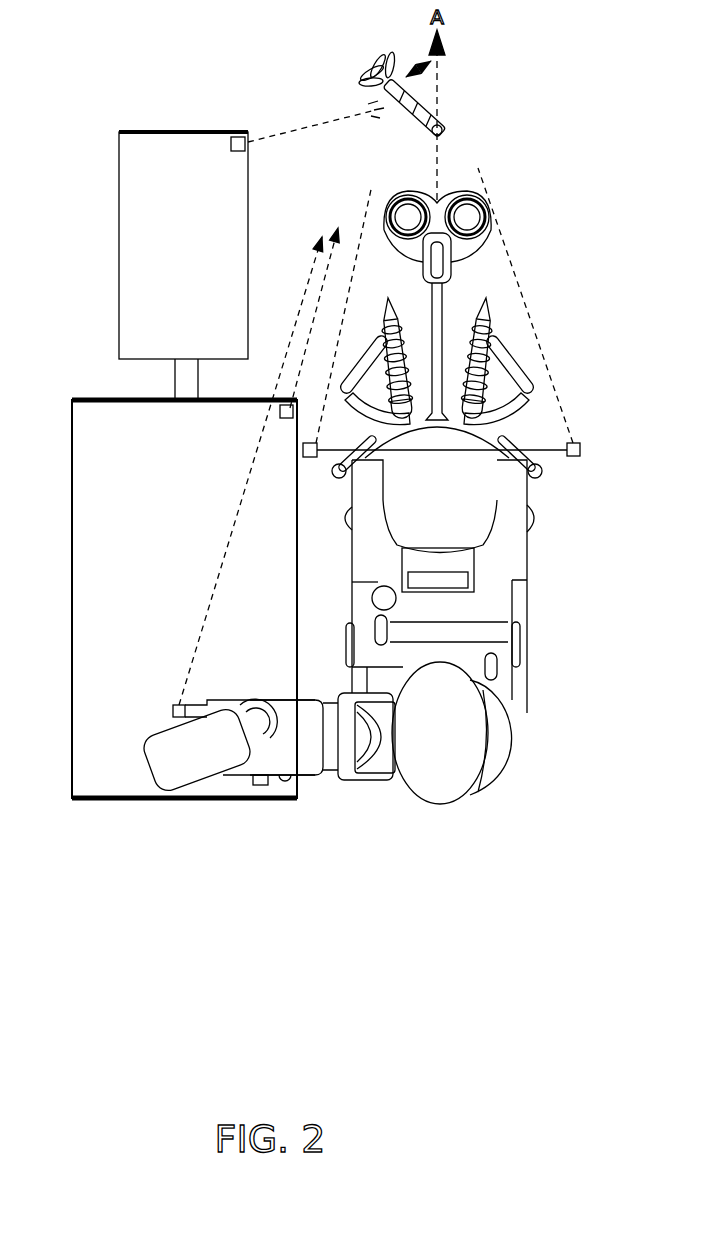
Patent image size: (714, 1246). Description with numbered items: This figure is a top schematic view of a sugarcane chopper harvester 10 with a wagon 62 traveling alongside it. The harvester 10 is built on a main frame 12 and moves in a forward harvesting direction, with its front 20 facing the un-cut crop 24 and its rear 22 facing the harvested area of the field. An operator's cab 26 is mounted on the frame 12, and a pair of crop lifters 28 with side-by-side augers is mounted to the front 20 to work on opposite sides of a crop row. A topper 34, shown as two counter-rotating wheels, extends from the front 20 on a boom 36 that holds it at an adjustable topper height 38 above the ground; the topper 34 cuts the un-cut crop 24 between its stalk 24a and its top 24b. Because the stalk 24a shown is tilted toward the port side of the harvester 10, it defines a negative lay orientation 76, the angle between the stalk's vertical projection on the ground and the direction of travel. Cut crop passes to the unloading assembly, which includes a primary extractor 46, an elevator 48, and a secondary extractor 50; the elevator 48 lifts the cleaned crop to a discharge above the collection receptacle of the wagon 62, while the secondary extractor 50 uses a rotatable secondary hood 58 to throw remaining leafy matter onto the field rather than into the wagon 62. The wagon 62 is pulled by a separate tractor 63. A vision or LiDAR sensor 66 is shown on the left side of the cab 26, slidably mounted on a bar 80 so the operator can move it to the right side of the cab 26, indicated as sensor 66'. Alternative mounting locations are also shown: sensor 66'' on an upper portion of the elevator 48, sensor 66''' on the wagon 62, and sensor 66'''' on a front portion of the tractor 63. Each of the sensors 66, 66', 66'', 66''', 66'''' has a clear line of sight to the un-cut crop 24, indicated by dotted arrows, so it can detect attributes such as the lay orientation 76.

The harvester 10 is at (600, 514).
The main frame 12 is at (512, 550).
The front 20 is at (403, 462).
The rear 22 is at (512, 700).
The un-cut crop 24 is at (369, 109).
The stalk 24a is at (405, 108).
The top 24b is at (372, 74).
The operator's cab 26 is at (515, 497).
The crop lifters 28 is at (388, 298).
The topper 34 is at (466, 212).
The boom 36 is at (438, 323).
The topper height 38 is at (313, 767).
The primary extractor 46 is at (483, 720).
The elevator 48 is at (317, 707).
The secondary extractor 50 is at (185, 780).
The secondary hood 58 is at (466, 129).
The wagon 62 is at (82, 660).
The tractor 63 is at (122, 250).
The sensor 66 is at (404, 489).
The sensor 66' is at (613, 426).
The sensor 66'' is at (224, 477).
The sensor 66''' is at (259, 337).
The sensor 66'''' is at (255, 119).
The lay orientation 76 is at (408, 68).
The bar 80 is at (445, 448).